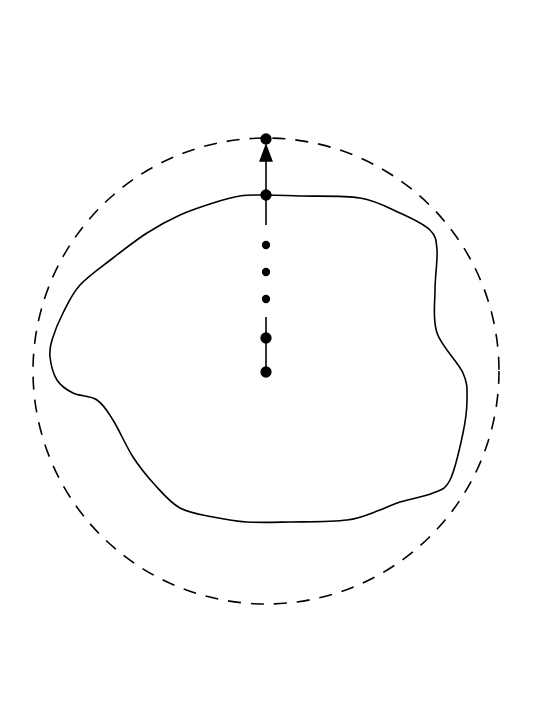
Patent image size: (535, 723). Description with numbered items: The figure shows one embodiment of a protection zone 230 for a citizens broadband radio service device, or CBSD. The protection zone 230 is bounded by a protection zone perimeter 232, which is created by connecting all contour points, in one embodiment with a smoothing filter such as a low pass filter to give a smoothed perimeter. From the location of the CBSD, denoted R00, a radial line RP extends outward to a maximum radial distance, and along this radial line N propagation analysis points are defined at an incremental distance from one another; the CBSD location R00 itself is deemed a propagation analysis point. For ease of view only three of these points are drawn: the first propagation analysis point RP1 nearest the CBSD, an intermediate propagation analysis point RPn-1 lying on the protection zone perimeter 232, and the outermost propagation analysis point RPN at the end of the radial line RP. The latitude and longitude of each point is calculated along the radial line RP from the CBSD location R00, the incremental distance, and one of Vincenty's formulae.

The protection zone 230 is at (282, 31).
The protection zone perimeter 232 is at (290, 521).
The radial line RP is at (262, 181).
The propagation analysis point R_P,N RPN is at (266, 137).
The propagation analysis point R_P,n-1 RPn-1 is at (296, 208).
The propagation analysis point R_P,1 RP1 is at (291, 344).
The CBSD location R00 is at (291, 382).